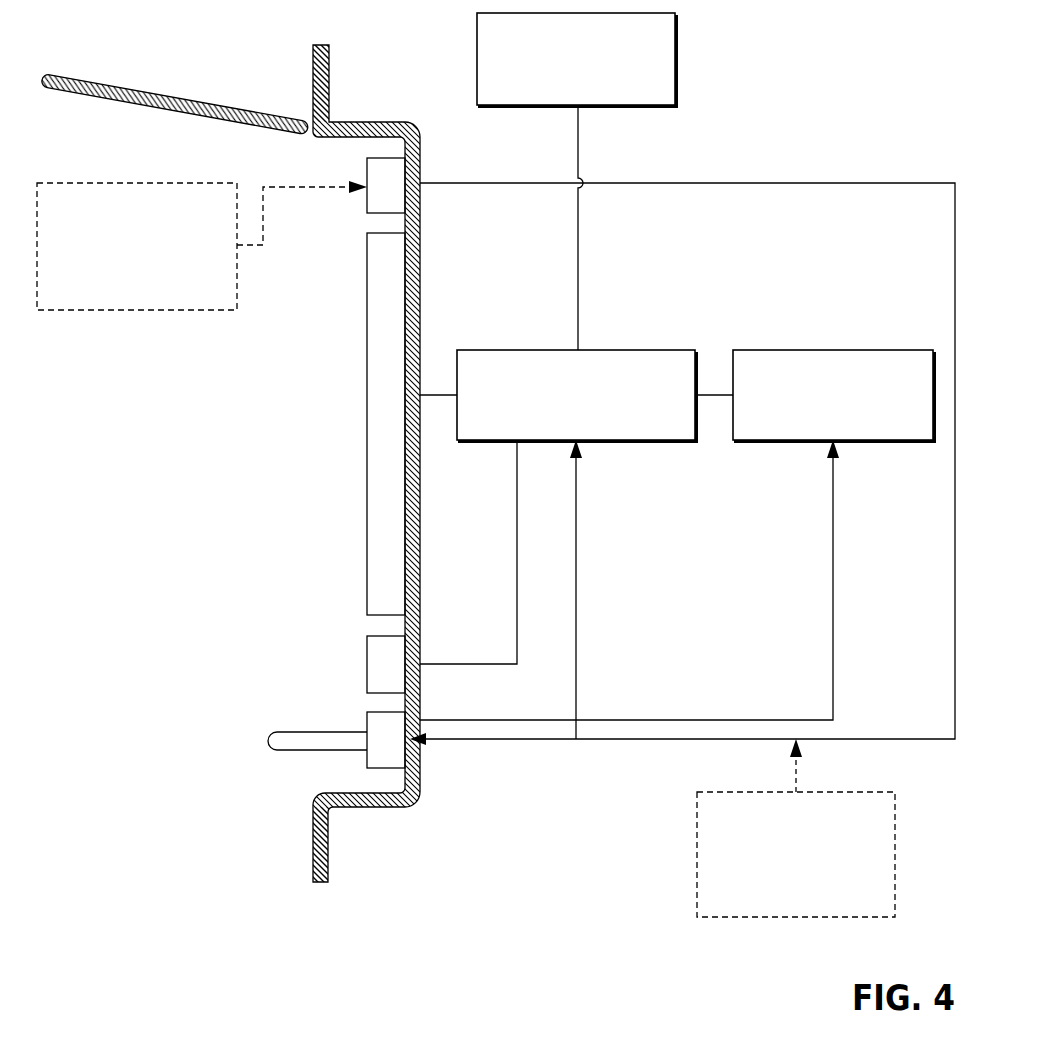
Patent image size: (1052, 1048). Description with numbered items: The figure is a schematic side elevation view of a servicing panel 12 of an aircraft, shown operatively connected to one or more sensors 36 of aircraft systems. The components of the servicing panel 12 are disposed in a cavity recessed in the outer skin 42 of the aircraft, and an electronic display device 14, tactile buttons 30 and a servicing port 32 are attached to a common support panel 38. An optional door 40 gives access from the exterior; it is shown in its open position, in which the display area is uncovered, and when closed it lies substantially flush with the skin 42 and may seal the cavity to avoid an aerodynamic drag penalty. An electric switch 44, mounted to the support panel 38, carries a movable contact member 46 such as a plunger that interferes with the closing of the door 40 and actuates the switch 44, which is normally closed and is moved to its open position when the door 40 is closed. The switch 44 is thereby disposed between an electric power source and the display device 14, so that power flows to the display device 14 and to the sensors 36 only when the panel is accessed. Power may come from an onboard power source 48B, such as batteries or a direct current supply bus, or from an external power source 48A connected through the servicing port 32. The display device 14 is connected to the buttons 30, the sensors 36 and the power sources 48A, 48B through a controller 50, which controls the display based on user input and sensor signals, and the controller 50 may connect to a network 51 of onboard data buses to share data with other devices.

The servicing panel 12 is at (138, 428).
The electronic display device 14 is at (367, 352).
The tactile buttons 30 is at (367, 667).
The servicing port 32 is at (367, 202).
The sensors 36 is at (852, 428).
The support panel 38 is at (420, 293).
The door 40 is at (137, 102).
The outer skin 42 is at (313, 77).
The electric switch 44 is at (310, 700).
The movable contact member 46 is at (290, 730).
The external power source 48A is at (108, 299).
The onboard power source 48B is at (768, 905).
The controller 50 is at (557, 428).
The network 51 is at (557, 96).